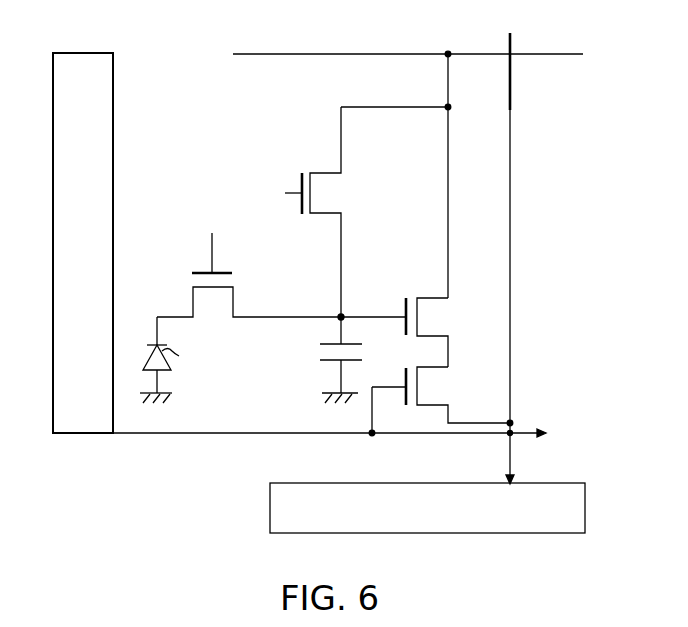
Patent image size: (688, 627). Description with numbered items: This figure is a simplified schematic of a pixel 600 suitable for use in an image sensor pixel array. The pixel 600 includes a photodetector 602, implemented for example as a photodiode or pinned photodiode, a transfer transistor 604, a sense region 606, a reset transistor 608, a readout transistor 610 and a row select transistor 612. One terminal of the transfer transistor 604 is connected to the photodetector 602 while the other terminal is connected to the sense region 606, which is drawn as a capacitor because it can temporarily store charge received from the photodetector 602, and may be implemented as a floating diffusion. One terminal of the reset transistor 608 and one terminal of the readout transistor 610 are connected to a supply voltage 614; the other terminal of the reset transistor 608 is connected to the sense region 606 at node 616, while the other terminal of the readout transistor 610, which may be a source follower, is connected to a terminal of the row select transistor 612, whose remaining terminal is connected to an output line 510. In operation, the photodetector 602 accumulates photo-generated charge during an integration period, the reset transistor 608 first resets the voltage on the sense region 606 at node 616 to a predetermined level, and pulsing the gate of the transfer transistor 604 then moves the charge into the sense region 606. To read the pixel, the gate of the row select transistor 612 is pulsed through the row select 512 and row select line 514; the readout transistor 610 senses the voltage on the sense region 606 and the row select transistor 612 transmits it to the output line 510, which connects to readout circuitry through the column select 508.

The pixel 600 is at (196, 94).
The row select 512 is at (80, 435).
The row select line 514 is at (150, 435).
The supply voltage (Vdd) 614 is at (373, 52).
The output line 510 is at (510, 370).
The reset (RST) transistor 608 is at (328, 168).
The transfer transistor (TX) 604 is at (212, 247).
The photodetector (PD) 602 is at (183, 360).
The node 616 is at (340, 316).
The sense region 606 is at (322, 362).
The readout transistor 610 is at (425, 296).
The row select (RS) transistor 612 is at (437, 408).
The column select 508 is at (270, 513).